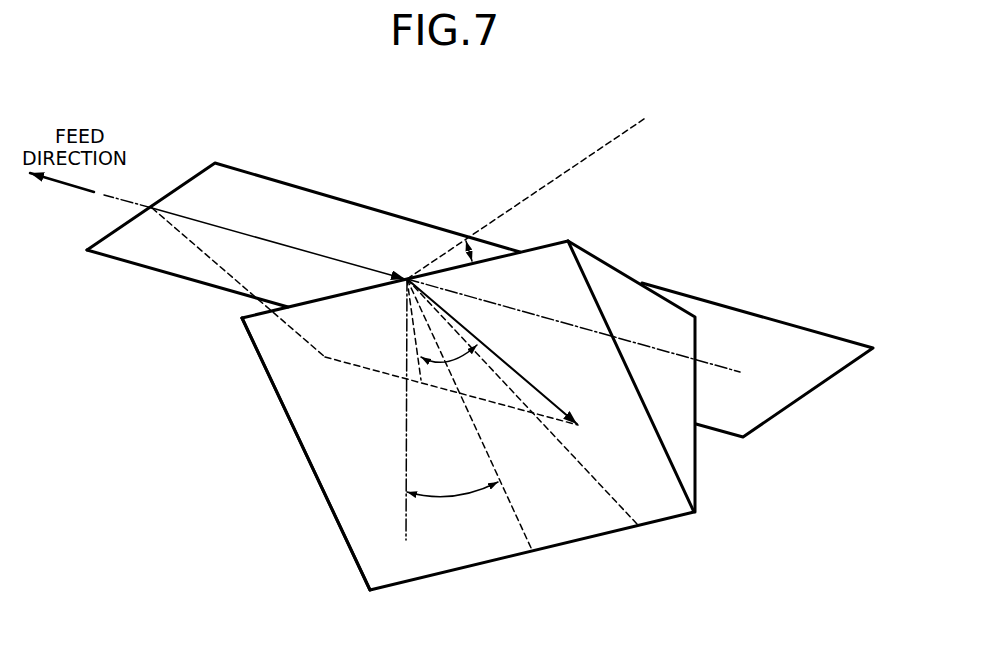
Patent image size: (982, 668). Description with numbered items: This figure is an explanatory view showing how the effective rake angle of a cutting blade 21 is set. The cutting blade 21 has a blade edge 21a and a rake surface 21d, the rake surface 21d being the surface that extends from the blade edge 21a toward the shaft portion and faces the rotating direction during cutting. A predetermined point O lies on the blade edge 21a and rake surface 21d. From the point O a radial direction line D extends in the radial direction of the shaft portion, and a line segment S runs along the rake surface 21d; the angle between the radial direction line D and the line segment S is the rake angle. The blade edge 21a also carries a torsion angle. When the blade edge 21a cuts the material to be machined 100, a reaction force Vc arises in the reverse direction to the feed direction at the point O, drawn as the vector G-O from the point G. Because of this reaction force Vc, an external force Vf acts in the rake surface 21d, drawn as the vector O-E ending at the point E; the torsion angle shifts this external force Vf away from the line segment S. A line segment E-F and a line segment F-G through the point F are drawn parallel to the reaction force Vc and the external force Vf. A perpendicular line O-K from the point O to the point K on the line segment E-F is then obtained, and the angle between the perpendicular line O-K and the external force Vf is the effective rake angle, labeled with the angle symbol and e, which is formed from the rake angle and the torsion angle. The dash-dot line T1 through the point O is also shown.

The material to be machined 100 is at (157, 257).
The cutting blade 21 is at (367, 541).
The blade edge 21a is at (492, 256).
The rake surface 21d is at (330, 468).
The point G is at (152, 206).
The reaction force Vc is at (283, 243).
The point O is at (408, 276).
The line T1 is at (738, 374).
The point F is at (325, 360).
The radial direction line D is at (405, 460).
The point K is at (424, 385).
The line segment S is at (510, 500).
The effective rake angle e is at (522, 401).
The external force Vf is at (533, 387).
The point E is at (581, 427).